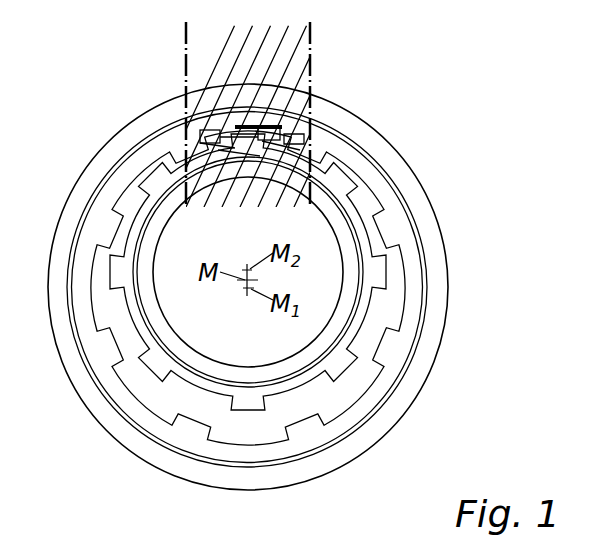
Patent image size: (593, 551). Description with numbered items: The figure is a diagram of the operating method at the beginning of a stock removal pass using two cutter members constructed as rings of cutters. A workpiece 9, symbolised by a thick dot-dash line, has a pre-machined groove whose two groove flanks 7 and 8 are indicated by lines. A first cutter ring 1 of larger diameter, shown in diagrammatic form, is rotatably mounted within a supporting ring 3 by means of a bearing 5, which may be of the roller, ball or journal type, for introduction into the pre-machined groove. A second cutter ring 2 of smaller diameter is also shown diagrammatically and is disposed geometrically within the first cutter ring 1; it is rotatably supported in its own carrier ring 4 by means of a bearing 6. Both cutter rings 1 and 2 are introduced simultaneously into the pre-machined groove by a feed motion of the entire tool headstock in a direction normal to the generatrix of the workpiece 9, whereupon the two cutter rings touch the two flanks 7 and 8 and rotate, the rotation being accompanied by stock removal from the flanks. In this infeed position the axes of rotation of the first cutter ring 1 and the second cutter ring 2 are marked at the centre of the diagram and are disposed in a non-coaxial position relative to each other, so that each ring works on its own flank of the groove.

The first cutter ring 1 is at (335, 143).
The second cutter ring 2 is at (333, 183).
The supporting ring 3 is at (417, 200).
The carrier ring 4 is at (348, 265).
The bearing 5 is at (430, 277).
The bearing 6 is at (343, 340).
The groove flank 7 is at (187, 117).
The groove flank 8 is at (285, 130).
The workpiece 9 is at (257, 65).